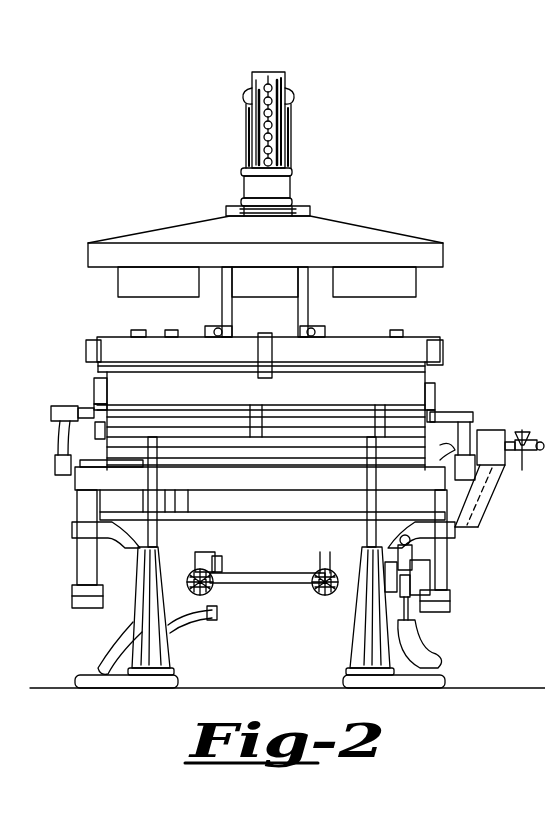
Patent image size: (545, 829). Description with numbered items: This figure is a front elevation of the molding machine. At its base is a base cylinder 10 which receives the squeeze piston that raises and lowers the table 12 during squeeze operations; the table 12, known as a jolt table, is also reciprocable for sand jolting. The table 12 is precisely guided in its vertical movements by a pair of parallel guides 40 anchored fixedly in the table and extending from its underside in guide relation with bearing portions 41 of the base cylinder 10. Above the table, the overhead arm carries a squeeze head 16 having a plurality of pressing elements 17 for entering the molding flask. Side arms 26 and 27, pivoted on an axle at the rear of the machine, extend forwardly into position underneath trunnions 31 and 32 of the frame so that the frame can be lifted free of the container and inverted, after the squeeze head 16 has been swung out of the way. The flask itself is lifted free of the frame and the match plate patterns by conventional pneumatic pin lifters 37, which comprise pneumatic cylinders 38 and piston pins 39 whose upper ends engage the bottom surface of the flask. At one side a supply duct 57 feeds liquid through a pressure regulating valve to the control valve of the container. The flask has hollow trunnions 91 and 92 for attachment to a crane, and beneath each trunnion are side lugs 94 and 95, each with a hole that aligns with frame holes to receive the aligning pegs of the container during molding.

The base cylinder 10 is at (278, 551).
The table 12 is at (72, 484).
The squeeze head 16 is at (345, 224).
The pressing elements 17 is at (118, 280).
The side arm 26 is at (57, 438).
The side arm 27 is at (500, 430).
The trunnion 31 is at (55, 413).
The trunnion 32 is at (470, 413).
The pneumatic pin lifters 37 is at (124, 648).
The pneumatic cylinders 38 is at (138, 625).
The piston pins 39 is at (148, 525).
The parallel guides 40 is at (77, 568).
The bearing portions 41 is at (72, 530).
The supply duct 57 is at (530, 462).
The hollow trunnion 91 is at (432, 388).
The hollow trunnion 92 is at (96, 383).
The side lug 94 is at (436, 404).
The side lug 95 is at (94, 399).